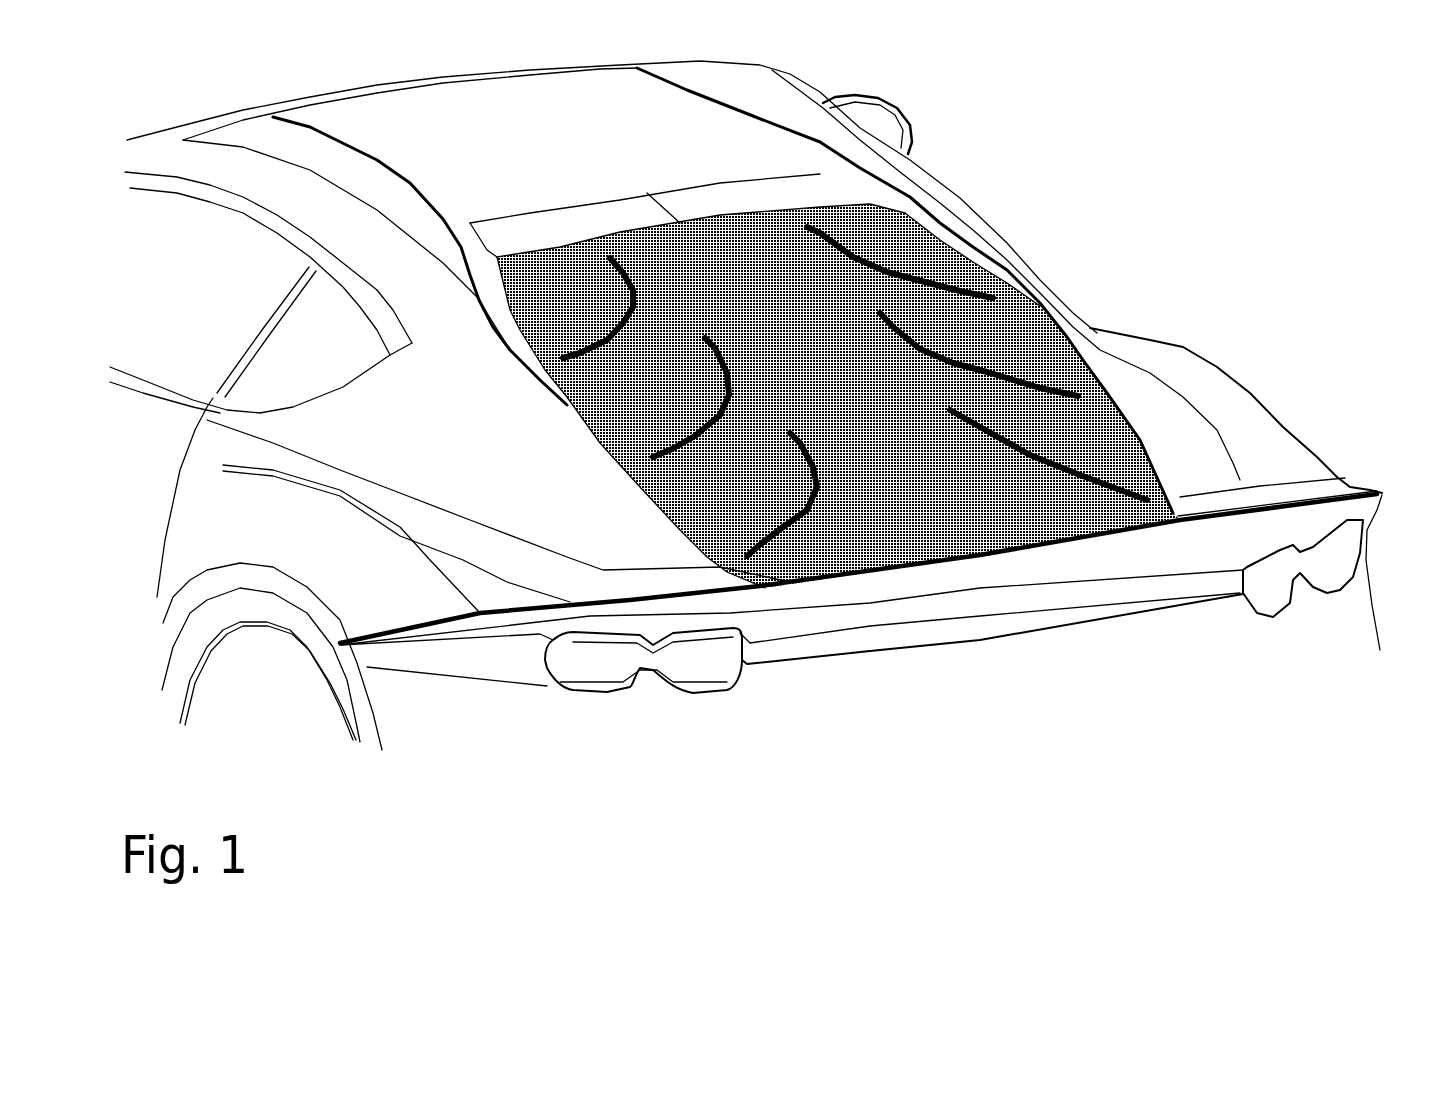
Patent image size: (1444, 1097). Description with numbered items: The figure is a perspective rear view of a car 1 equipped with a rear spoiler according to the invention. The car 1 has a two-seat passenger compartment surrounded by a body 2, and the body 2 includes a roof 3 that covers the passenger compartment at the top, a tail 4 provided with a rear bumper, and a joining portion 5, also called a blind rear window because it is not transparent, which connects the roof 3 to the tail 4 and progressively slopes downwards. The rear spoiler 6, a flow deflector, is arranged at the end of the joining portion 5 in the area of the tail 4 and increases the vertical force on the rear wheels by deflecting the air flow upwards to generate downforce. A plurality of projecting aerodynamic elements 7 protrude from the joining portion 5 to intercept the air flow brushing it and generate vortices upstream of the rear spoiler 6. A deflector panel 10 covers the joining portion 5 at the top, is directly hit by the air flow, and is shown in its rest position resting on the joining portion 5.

The car 1 is at (1313, 838).
The body 2 is at (1293, 63).
The roof 3 is at (547, 110).
The tail 4 is at (990, 650).
The joining portion 5 is at (1010, 345).
The rear spoiler 6 is at (1263, 512).
The projecting aerodynamic elements 7 is at (827, 247).
The deflector panel 10 is at (717, 252).